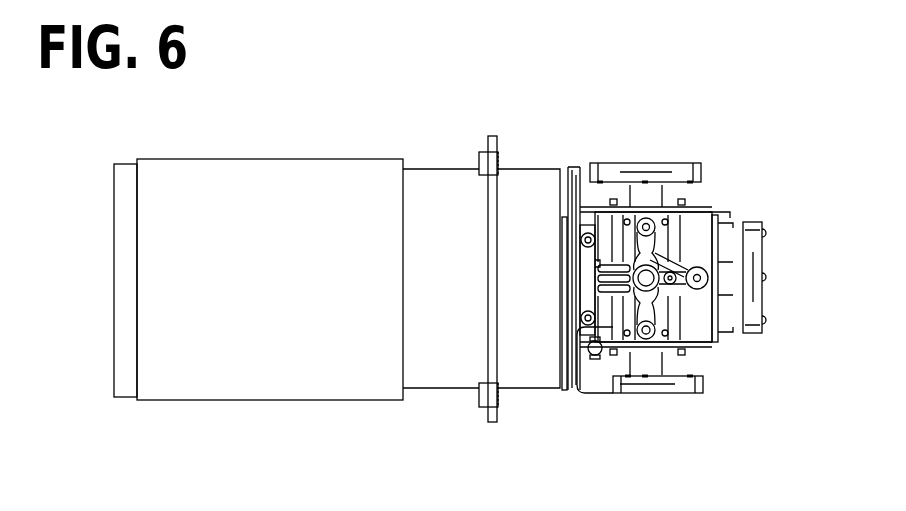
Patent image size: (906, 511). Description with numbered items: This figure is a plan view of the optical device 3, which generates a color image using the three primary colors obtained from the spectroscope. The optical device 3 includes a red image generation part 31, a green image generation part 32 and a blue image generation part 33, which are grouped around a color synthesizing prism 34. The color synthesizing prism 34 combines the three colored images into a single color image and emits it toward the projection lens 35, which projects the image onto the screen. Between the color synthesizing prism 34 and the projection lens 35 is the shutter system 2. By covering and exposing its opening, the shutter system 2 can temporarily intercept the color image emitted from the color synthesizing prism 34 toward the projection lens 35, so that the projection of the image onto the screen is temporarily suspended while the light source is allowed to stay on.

The shutter system 2 is at (564, 398).
The optical device 3 is at (708, 291).
The red image generation part 31 is at (675, 395).
The green image generation part 32 is at (762, 300).
The blue image generation part 33 is at (662, 160).
The color synthesizing prism 34 is at (675, 257).
The projection lens 35 is at (347, 382).